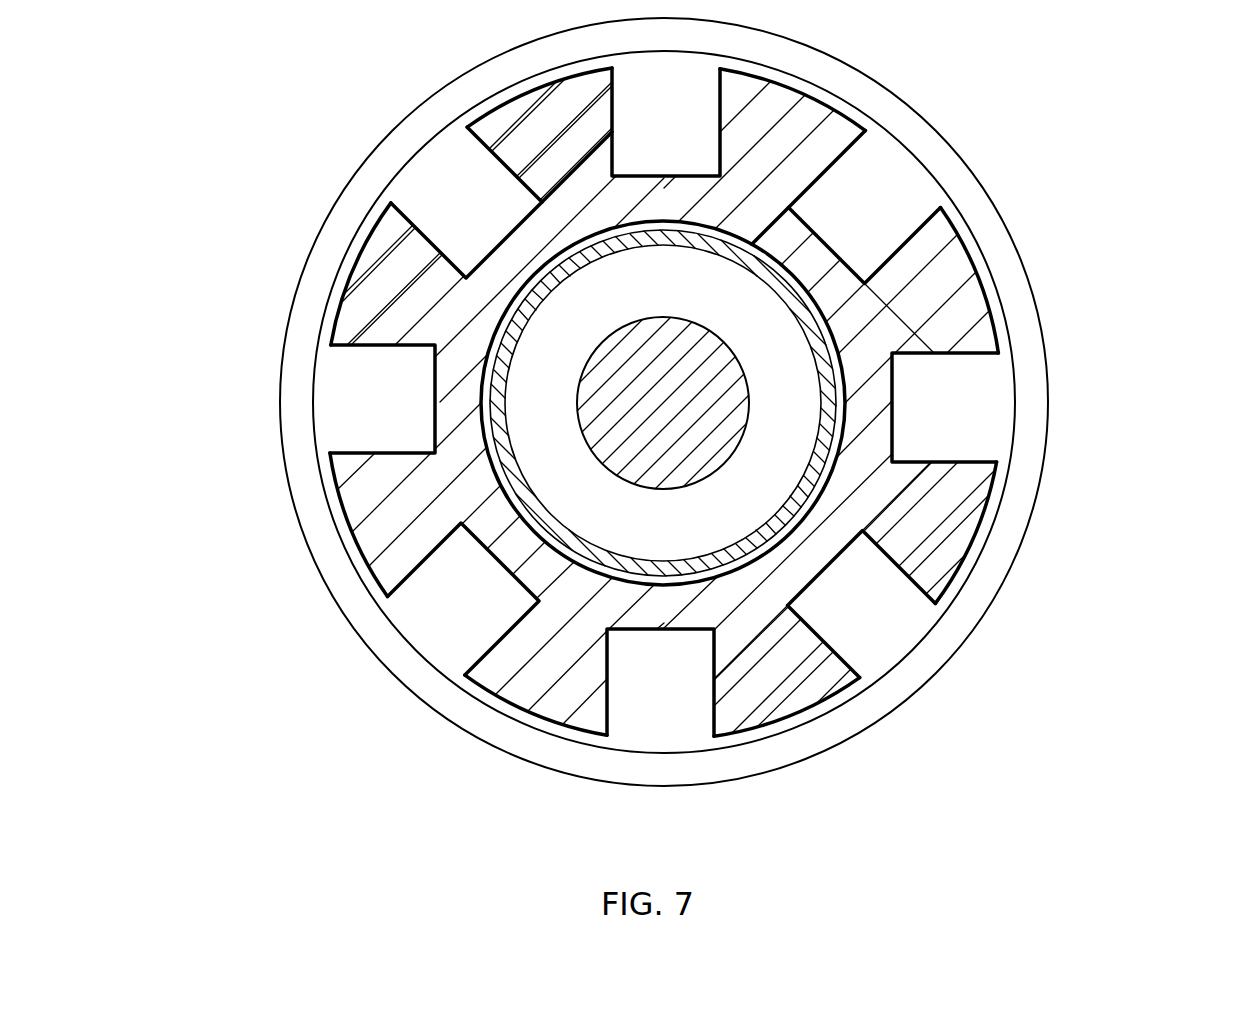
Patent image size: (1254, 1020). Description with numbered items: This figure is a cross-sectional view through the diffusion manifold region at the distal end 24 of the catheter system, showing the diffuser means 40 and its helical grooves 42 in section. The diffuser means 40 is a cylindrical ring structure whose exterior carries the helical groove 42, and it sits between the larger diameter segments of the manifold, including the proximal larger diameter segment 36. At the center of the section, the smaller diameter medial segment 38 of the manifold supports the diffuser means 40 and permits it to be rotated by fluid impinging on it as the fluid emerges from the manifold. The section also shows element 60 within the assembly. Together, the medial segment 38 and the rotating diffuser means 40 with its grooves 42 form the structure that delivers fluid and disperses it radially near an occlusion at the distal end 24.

The distal end 24 is at (1030, 662).
The proximal larger diameter segment 36 is at (1031, 291).
The medial segment 38 is at (826, 431).
The diffuser means 40 is at (940, 520).
The helical groove 42 is at (838, 165).
The shaft 60 is at (748, 392).